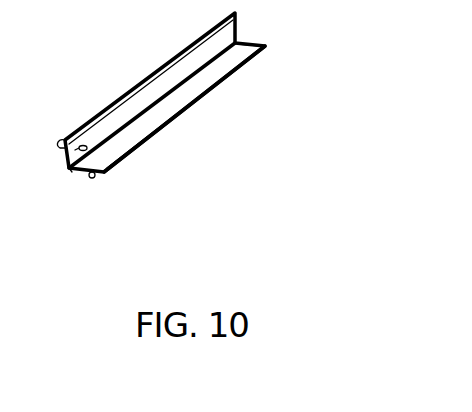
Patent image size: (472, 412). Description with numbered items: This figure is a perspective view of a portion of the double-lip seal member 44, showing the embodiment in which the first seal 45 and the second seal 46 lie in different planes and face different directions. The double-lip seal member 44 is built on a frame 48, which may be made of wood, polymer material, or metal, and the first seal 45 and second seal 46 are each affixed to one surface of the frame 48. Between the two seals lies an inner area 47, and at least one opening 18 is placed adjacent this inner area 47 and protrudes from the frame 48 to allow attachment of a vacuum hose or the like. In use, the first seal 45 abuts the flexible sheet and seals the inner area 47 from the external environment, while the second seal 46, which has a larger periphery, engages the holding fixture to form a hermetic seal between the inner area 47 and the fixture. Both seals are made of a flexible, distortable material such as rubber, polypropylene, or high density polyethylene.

The opening 18 is at (108, 136).
The double-lip seal member 44 is at (300, 50).
The first seal 45 is at (57, 140).
The second seal 46 is at (95, 177).
The inner area 47 is at (75, 173).
The frame 48 is at (202, 95).